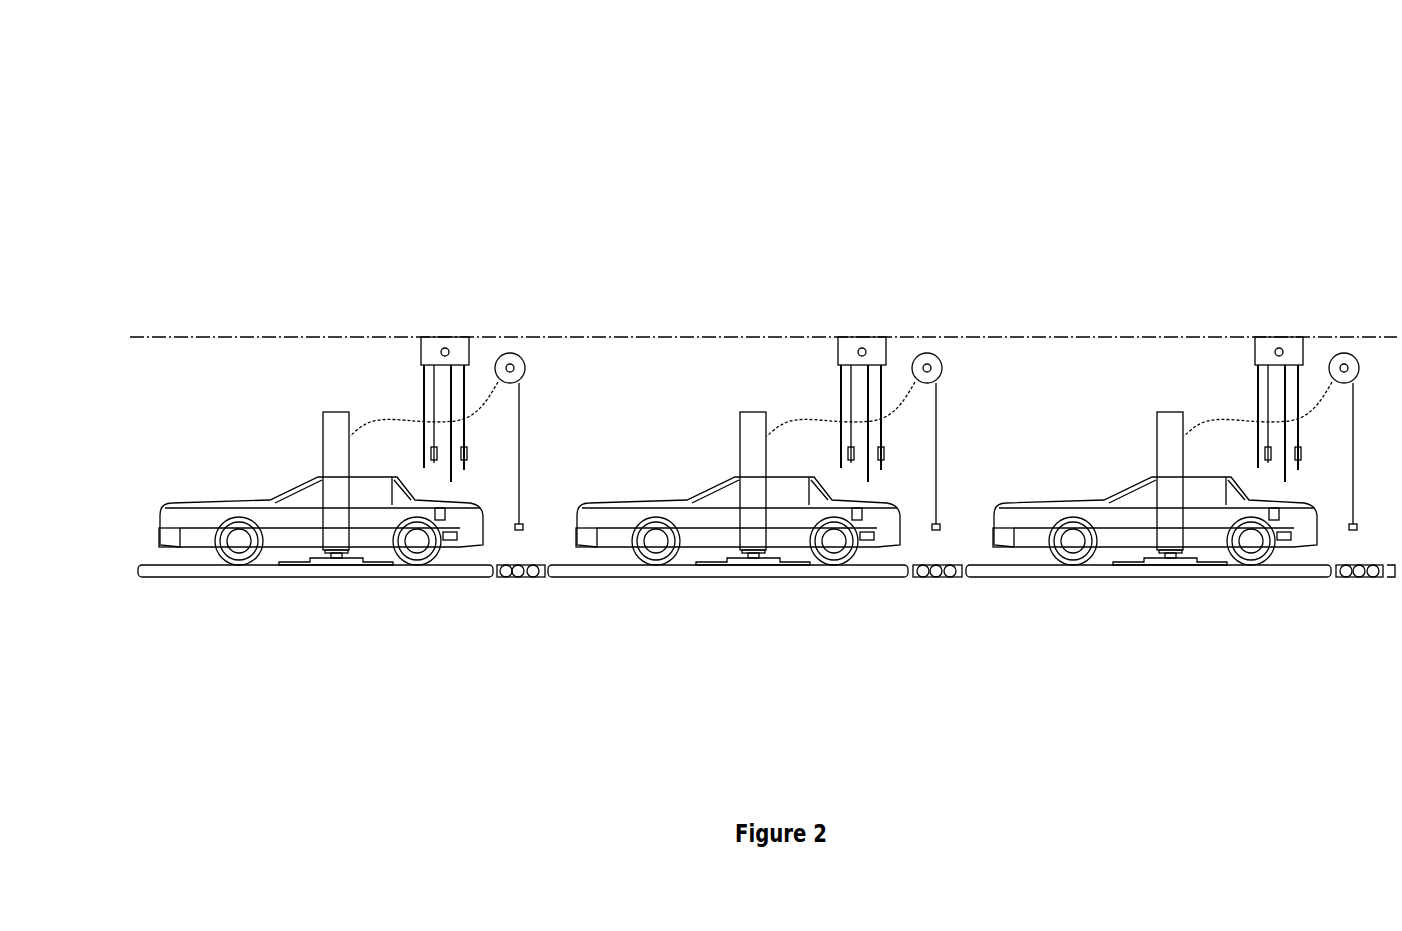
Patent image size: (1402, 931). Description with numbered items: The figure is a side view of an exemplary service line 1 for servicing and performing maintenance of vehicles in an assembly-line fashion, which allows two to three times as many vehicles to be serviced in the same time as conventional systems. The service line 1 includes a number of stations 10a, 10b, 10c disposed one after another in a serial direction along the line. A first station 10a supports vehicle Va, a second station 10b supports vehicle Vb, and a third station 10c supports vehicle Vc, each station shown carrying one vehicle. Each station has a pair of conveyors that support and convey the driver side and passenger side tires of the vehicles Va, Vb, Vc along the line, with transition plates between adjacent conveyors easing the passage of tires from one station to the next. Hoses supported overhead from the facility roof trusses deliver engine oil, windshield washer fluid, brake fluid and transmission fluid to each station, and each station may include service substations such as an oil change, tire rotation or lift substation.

The service line 1 is at (498, 135).
The first station 10a is at (1155, 613).
The second station 10b is at (738, 587).
The station 10c is at (326, 603).
The vehicle Va is at (1055, 520).
The vehicle Vb is at (617, 517).
The vehicle Vc is at (218, 518).